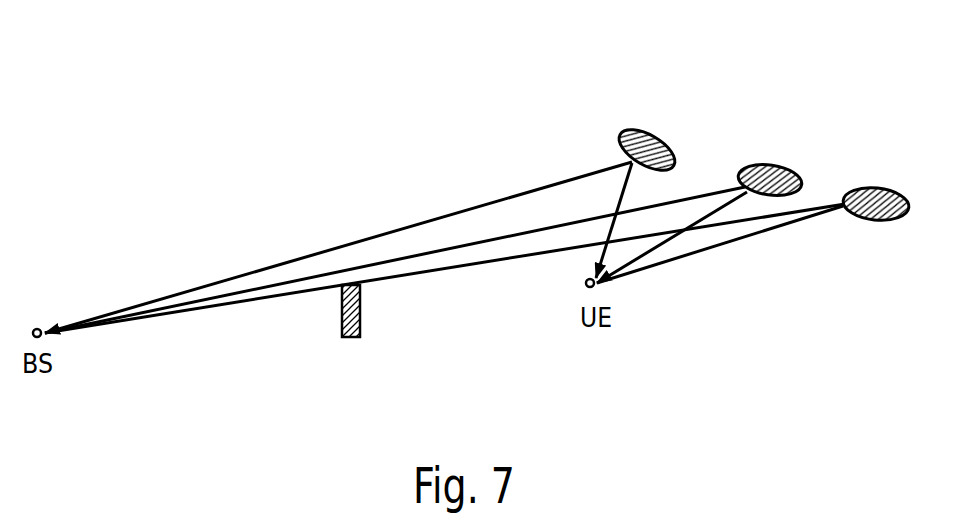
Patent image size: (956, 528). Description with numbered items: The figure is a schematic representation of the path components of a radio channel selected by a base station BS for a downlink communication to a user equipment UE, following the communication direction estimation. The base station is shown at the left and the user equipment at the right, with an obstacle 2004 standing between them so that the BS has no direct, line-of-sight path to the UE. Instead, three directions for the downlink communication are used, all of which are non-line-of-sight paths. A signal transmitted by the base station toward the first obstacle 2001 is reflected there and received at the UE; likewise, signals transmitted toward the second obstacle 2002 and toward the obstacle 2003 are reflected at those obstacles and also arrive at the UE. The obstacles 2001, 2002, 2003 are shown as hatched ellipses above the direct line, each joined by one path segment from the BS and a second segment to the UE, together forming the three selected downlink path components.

The first obstacle 2001 is at (660, 127).
The second obstacle 2002 is at (778, 164).
The obstacle 2003 is at (878, 188).
The obstacle 2004 is at (344, 339).